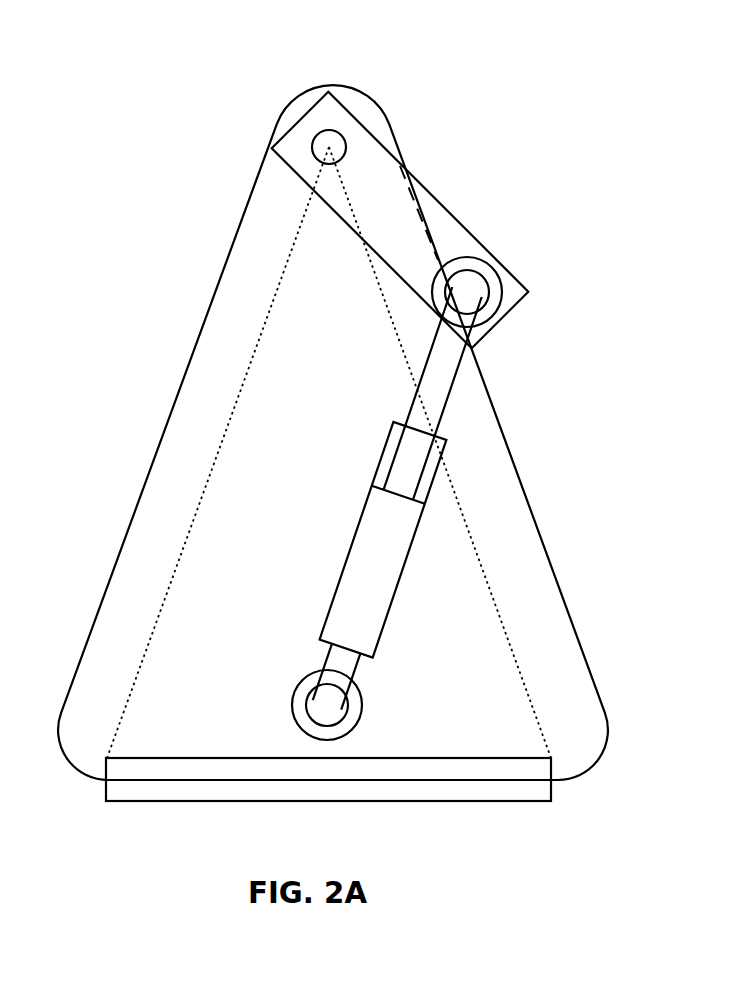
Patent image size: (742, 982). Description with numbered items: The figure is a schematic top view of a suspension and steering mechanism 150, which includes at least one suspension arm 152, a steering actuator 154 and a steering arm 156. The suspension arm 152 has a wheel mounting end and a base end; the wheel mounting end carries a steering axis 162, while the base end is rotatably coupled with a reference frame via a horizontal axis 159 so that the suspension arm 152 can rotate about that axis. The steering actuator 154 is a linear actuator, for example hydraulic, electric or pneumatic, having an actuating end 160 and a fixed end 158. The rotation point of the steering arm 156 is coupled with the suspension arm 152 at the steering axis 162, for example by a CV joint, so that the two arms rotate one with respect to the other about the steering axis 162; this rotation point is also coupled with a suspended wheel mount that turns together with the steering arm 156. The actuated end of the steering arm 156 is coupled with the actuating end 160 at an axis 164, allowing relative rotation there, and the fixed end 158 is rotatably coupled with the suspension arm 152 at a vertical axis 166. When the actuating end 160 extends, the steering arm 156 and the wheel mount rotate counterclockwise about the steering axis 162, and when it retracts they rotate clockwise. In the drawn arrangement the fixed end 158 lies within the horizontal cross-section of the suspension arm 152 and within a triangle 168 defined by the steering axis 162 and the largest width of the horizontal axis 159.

The suspension and steering mechanism 150 is at (236, 89).
The suspension arm 152 is at (155, 452).
The steering actuator 154 is at (355, 537).
The steering arm 156 is at (445, 205).
The fixed end 158 is at (317, 673).
The horizontal axis 159 is at (515, 802).
The actuating end 160 is at (490, 278).
The steering axis 162 is at (345, 147).
The axis 164 is at (467, 298).
The vertical axis 166 is at (325, 708).
The triangle 168 is at (465, 527).